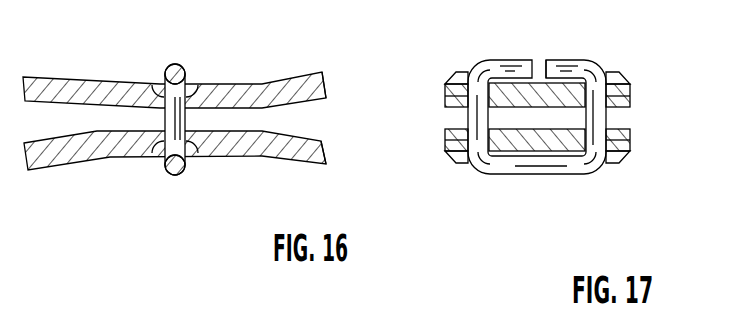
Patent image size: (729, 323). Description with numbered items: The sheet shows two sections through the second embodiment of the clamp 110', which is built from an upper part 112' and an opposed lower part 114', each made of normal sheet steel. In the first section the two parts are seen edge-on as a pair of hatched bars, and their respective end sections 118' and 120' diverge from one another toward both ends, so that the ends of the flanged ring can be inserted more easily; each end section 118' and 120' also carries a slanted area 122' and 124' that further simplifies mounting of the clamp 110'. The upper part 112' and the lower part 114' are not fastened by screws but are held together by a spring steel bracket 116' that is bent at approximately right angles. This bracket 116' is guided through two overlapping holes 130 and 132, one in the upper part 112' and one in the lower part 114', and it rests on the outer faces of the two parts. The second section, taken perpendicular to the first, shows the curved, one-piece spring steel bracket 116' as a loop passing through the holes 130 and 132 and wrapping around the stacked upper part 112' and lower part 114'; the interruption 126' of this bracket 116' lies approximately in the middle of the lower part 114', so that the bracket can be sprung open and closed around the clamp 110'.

In FIG. 16, the clamp 110' is at (235, 113).
In FIG. 17, the clamp 110' is at (534, 119).
In FIG. 16, the upper part 112' is at (384, 156).
In FIG. 16, the lower part 114' is at (384, 88).
In FIG. 16, the spring steel bracket 116' is at (185, 89).
In FIG. 17, the spring steel bracket 116' is at (546, 148).
In FIG. 16, the end section 118' is at (175, 177).
In FIG. 17, the end section 118' is at (520, 177).
In FIG. 16, the end section 120' is at (174, 58).
In FIG. 17, the end section 120' is at (525, 55).
In FIG. 17, the slanted area 122' is at (538, 181).
In FIG. 17, the slanted area 124' is at (549, 46).
In FIG. 17, the interruption 126' is at (555, 39).
In FIG. 16, the hole 130 is at (192, 148).
In FIG. 17, the hole 130 is at (447, 139).
In FIG. 16, the hole 132 is at (147, 82).
In FIG. 17, the hole 132 is at (447, 99).